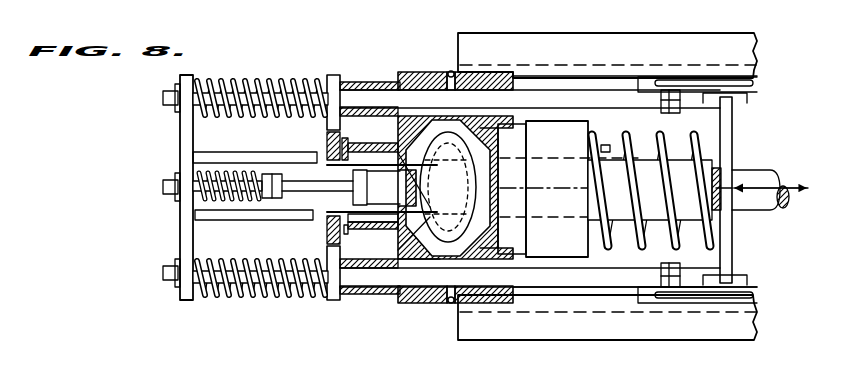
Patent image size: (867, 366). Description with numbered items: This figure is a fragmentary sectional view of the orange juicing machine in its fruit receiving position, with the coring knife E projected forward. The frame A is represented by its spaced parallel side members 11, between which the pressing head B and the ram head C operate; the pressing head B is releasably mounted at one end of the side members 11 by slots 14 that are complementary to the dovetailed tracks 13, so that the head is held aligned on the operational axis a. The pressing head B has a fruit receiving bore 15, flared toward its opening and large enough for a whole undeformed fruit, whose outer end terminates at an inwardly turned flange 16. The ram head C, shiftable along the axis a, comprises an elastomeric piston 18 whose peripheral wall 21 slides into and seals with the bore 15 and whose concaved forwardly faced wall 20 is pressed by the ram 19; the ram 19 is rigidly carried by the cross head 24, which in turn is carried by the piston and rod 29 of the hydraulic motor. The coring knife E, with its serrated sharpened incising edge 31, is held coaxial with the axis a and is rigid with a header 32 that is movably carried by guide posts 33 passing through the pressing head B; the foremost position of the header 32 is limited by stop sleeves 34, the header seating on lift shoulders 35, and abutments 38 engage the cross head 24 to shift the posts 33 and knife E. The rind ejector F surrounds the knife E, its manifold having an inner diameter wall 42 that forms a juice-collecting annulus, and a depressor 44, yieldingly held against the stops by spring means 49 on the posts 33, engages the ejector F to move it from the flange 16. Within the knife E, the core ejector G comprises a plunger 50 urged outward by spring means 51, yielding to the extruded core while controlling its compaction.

The side members 11 is at (534, 45).
The tracks 13 is at (446, 302).
The slots 14 is at (448, 71).
The fruit receiving bore 15 is at (499, 133).
The inwardly turned flange 16 is at (398, 129).
The piston 18 is at (421, 291).
The ram 19 is at (629, 226).
The concaved forwardly faced wall 20 is at (468, 167).
The peripheral wall 21 is at (486, 262).
The cross head 24 is at (733, 138).
The piston and rod 29 is at (765, 203).
The sharpened incising edge 31 is at (500, 173).
The header 32 is at (333, 74).
The guide posts 33 is at (347, 92).
The stop sleeves 34 is at (381, 82).
The lift shoulders 35 is at (345, 100).
The abutments 38 is at (710, 97).
The inner diameter wall 42 is at (386, 232).
The depressor 44 is at (180, 138).
The spring means 49 is at (244, 78).
The plunger 50 is at (448, 187).
The spring means 51 is at (230, 214).
The frame A is at (662, 32).
The pressing head B is at (412, 70).
The ram head C is at (565, 128).
The coring knife E is at (455, 187).
The rind ejector F is at (354, 240).
The core ejector G is at (333, 200).
The operational axis a is at (628, 186).